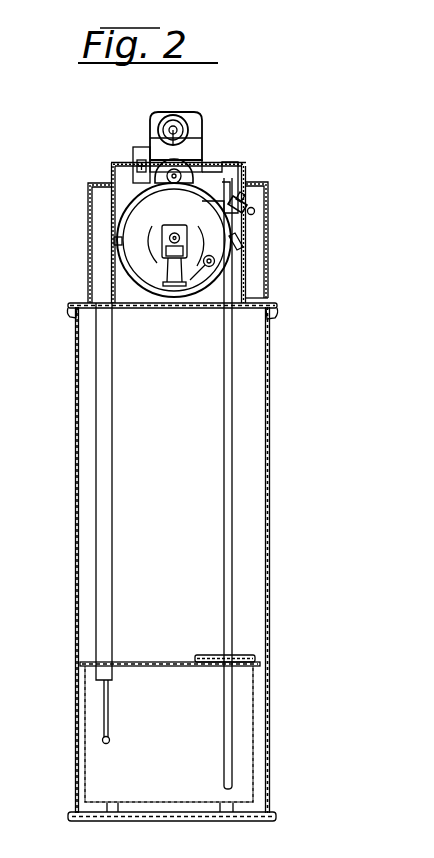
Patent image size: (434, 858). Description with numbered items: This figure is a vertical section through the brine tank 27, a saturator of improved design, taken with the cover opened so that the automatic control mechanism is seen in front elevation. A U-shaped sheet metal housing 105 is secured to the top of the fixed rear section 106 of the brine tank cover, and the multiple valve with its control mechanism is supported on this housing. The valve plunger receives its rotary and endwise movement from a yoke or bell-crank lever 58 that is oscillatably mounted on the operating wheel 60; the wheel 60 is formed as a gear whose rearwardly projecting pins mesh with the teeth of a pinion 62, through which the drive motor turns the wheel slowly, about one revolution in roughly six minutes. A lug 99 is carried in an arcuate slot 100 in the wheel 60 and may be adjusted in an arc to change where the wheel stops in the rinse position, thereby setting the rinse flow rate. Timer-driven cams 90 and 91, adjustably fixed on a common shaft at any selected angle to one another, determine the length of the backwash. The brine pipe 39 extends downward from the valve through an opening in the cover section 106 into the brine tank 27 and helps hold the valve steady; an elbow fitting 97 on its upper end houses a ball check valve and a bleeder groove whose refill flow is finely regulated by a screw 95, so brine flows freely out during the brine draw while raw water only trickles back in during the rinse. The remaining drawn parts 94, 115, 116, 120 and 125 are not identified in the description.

The brine tank 27 is at (270, 462).
The brine pipe 39 is at (224, 442).
The bell-crank lever 58 is at (163, 246).
The operating wheel 60 is at (104, 301).
The pinion 62 is at (186, 168).
The cam 90 is at (155, 132).
The cam 91 is at (186, 124).
The float rod 94 is at (106, 720).
The screw 95 is at (255, 212).
The elbow fitting 97 is at (242, 183).
The lug 99 is at (204, 288).
The arcuate slot 100 is at (207, 243).
The sheet metal housing 105 is at (116, 163).
The fixed rear section of the cover 106 is at (133, 308).
The plate 115 is at (142, 667).
The chamber wall 116 is at (85, 722).
The plate 120 is at (213, 654).
The pipe 125 is at (110, 550).